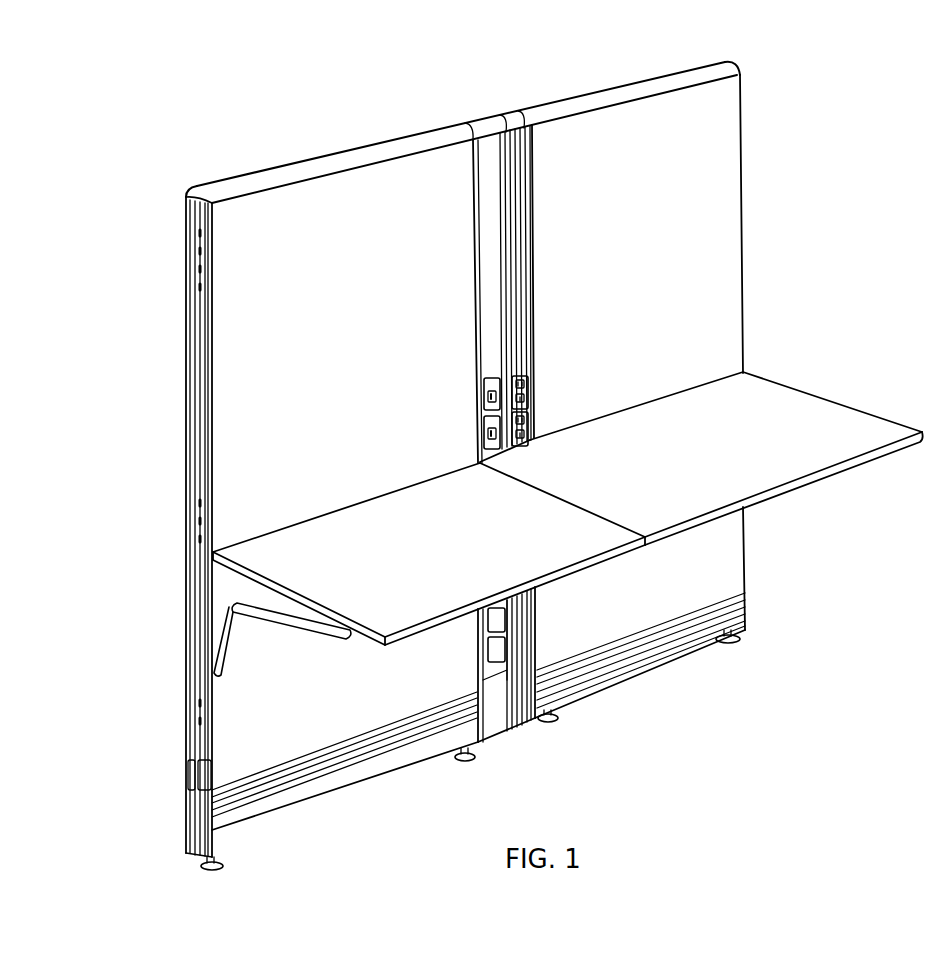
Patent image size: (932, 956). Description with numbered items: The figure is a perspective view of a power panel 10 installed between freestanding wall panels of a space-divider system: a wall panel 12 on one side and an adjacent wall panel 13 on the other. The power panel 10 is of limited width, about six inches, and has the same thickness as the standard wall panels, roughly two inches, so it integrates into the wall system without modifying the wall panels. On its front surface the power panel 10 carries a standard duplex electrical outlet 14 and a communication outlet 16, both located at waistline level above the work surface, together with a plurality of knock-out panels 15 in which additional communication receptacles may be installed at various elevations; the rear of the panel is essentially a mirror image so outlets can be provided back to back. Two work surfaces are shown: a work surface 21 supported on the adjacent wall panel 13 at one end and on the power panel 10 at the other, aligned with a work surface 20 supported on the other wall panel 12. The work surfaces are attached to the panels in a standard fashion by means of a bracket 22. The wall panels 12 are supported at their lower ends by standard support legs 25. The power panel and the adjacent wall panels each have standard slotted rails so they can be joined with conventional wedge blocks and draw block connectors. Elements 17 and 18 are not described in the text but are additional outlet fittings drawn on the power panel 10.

The power panel 10 is at (489, 156).
The wall panel 12 is at (262, 200).
The wall panel 13 is at (722, 158).
The duplex electrical outlet 14 is at (530, 420).
The knock-out panels 15 is at (482, 625).
The communication outlet 16 is at (483, 435).
The electrical receptacle 17 is at (530, 388).
The communication outlet 18 is at (483, 388).
The work surface 20 is at (313, 543).
The work surface 21 is at (840, 468).
The bracket 22 is at (232, 650).
The support legs 25 is at (223, 868).